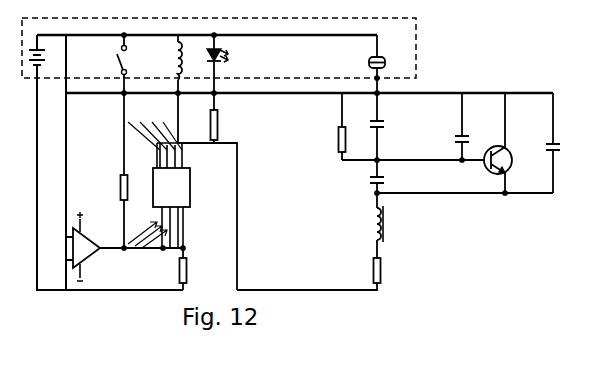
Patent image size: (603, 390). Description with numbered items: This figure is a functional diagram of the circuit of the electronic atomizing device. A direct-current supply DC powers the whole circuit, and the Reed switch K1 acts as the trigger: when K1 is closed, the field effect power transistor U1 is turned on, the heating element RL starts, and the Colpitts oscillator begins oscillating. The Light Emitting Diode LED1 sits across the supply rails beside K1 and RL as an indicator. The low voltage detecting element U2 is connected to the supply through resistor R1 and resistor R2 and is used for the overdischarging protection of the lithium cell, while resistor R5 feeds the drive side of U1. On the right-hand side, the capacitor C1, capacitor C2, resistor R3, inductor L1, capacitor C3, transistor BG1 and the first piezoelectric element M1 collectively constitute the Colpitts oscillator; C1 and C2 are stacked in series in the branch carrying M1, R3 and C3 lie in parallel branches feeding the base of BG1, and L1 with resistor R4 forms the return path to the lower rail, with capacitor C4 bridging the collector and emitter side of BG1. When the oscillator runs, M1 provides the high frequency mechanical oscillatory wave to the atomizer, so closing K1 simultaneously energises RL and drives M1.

The DC power supply DC is at (49, 162).
The Reed switch K1 is at (134, 64).
The heating element RL is at (189, 65).
The Light Emitting Diode LED1 is at (240, 64).
The first piezoelectric element M1 is at (390, 65).
The resistor R5 is at (227, 118).
The field effect power transistor U1 is at (156, 181).
The resistor R1 is at (135, 171).
The low voltage detecting element U2 is at (117, 240).
The resistor R2 is at (196, 269).
The resistor R3 is at (354, 126).
The capacitor C1 is at (389, 127).
The capacitor C2 is at (389, 177).
The inductor L1 is at (391, 224).
The resistor R4 is at (391, 273).
The capacitor C3 is at (473, 127).
The transistor BG1 is at (517, 144).
The capacitor C4 is at (564, 143).